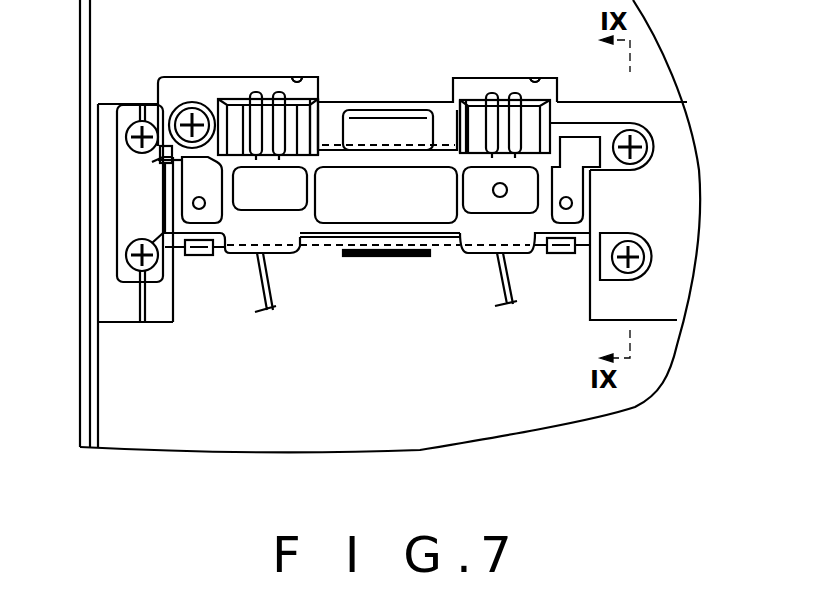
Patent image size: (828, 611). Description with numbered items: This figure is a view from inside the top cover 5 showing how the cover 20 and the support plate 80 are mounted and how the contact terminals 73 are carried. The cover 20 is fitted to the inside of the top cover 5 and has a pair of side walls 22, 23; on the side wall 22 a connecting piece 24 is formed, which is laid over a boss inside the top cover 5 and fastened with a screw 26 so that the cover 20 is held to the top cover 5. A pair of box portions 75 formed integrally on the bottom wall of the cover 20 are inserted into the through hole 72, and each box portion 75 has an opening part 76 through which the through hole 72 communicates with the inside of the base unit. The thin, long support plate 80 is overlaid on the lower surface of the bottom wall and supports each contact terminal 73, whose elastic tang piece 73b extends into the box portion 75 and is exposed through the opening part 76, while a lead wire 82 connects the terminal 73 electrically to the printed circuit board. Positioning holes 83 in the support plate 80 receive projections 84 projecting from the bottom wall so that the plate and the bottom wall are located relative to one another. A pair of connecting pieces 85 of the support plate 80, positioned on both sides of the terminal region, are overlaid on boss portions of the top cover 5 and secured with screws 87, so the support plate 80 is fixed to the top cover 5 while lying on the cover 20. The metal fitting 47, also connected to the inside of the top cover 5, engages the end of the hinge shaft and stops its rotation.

The top cover 5 is at (178, 438).
The cover 20 is at (328, 140).
The side wall 22 is at (592, 212).
The side wall 23 is at (168, 197).
The connecting piece 24 is at (648, 277).
The screw 26 is at (648, 250).
The metal fitting 47 is at (130, 228).
The through hole 72 is at (306, 78).
The contact terminal 73 is at (279, 156).
The tang piece 73b is at (280, 90).
The box portion 75 is at (305, 80).
The opening part 76 is at (243, 113).
The support plate 80 is at (388, 233).
The lead wire 82 is at (270, 292).
The positioning hole 83 is at (188, 196).
The projection 84 is at (202, 212).
The connecting piece 85 is at (200, 105).
The screw 87 is at (180, 108).